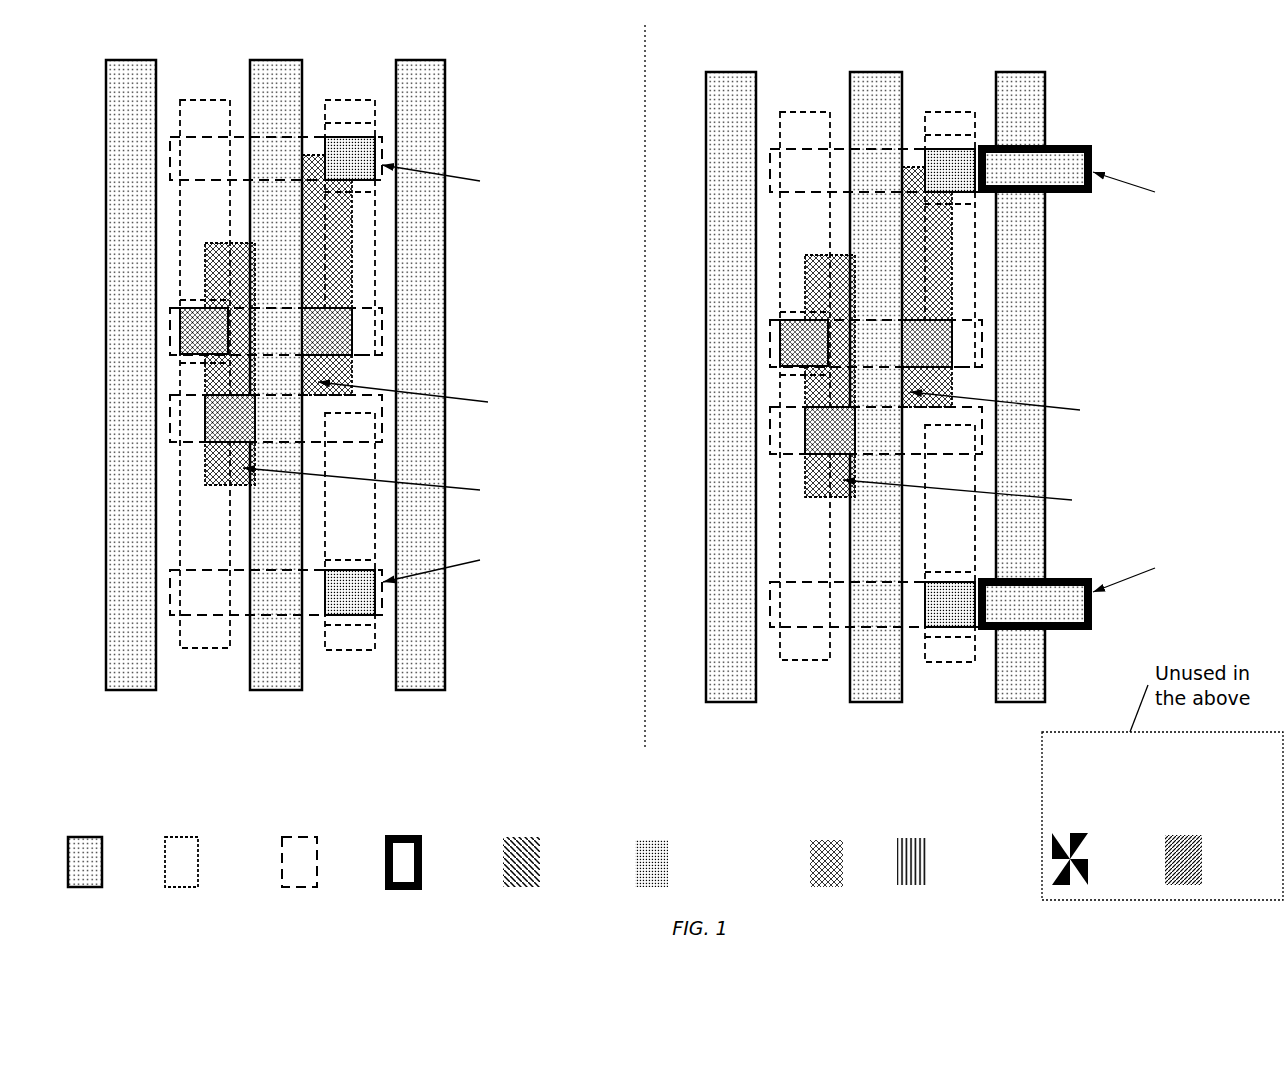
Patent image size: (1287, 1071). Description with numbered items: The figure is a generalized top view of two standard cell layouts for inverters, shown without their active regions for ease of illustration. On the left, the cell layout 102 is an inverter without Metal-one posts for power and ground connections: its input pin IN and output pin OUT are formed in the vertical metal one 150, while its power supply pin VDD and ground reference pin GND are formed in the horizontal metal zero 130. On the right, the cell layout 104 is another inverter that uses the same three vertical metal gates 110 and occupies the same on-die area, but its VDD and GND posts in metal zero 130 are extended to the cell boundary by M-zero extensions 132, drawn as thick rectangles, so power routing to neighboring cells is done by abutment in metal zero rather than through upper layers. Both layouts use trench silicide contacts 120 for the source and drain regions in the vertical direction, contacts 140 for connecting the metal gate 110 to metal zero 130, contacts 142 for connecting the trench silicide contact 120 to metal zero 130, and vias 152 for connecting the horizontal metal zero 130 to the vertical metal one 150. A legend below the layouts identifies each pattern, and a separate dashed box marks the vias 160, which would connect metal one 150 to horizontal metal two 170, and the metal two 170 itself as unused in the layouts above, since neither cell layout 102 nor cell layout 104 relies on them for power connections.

The cell layout 102 is at (517, 110).
The cell layout 104 is at (1200, 110).
The metal gate 110 is at (100, 787).
The trench silicide contact 120 is at (198, 808).
The metal 0 130 is at (298, 837).
The M0 extension 132 is at (413, 793).
The contact 140 is at (553, 808).
The contact 142 is at (683, 807).
The metal 1 150 is at (827, 840).
The via 152 is at (935, 807).
The via 160 is at (1085, 790).
The metal 2 170 is at (1190, 835).